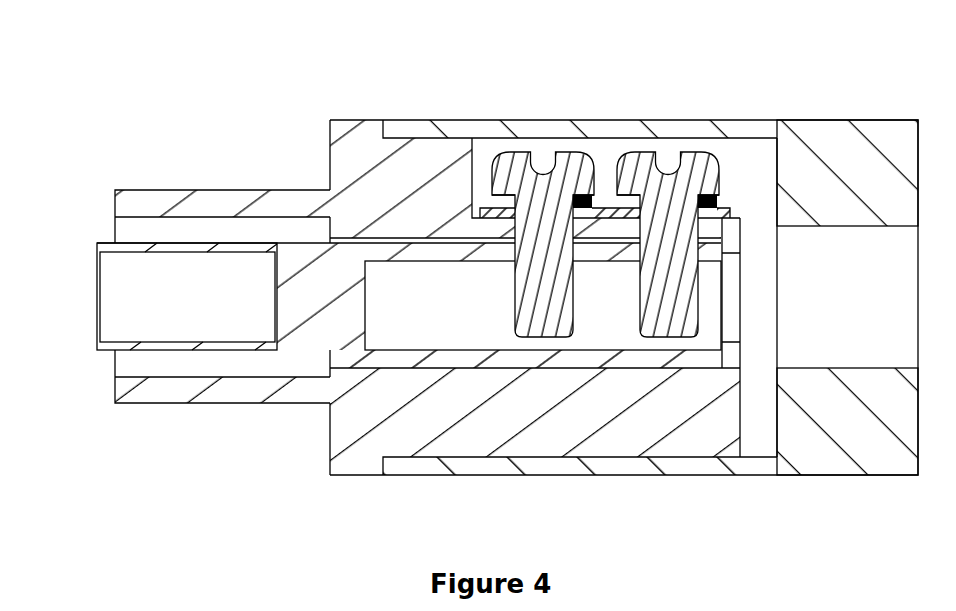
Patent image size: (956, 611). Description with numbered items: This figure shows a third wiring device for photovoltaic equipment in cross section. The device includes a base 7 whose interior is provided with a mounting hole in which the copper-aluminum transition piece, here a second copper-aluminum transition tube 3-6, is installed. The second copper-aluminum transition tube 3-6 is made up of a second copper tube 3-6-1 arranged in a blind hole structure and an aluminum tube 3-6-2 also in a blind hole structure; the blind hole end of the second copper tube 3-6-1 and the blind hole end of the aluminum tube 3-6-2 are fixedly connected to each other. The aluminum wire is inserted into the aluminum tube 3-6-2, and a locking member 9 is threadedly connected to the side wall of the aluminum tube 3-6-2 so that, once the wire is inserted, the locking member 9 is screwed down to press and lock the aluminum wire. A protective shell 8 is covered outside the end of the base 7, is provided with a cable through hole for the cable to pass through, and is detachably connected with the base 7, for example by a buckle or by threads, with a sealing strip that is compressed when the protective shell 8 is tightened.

The base 7 is at (344, 121).
The protective shell 8 is at (849, 150).
The locking member 9 is at (525, 172).
The second copper-aluminum transition tube 3-6 is at (340, 317).
The second copper tube 3-6-1 is at (122, 298).
The aluminum tube 3-6-2 is at (444, 312).